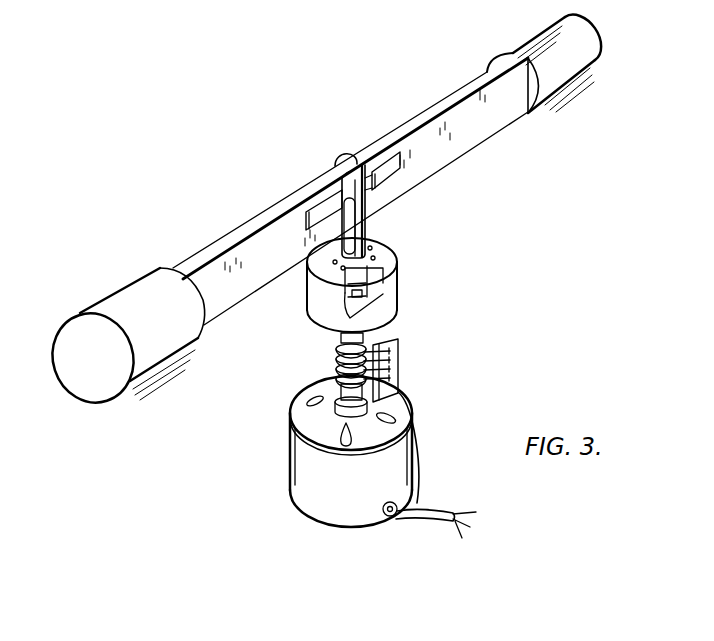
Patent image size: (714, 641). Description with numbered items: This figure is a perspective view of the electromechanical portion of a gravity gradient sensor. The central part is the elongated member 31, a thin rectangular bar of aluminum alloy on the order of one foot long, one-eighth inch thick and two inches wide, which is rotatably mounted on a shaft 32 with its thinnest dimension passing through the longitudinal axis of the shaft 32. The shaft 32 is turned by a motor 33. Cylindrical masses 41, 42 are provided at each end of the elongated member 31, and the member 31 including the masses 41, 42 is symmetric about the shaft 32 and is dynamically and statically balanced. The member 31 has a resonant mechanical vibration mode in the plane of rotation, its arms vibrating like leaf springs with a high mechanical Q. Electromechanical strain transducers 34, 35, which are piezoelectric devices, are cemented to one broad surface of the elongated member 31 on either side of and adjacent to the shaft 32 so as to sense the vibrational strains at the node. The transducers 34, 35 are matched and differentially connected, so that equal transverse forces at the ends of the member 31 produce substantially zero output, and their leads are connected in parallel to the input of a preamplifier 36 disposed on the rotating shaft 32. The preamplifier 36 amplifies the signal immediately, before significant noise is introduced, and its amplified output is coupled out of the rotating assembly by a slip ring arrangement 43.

The elongated member 31 is at (210, 255).
The shaft 32 is at (341, 157).
The motor 33 is at (300, 413).
The electromechanical strain transducer 34 is at (397, 180).
The electromechanical strain transducer 35 is at (312, 232).
The preamplifier 36 is at (392, 262).
The cylindrical mass 41 is at (570, 60).
The cylindrical mass 42 is at (88, 365).
The slip ring arrangement 43 is at (402, 343).